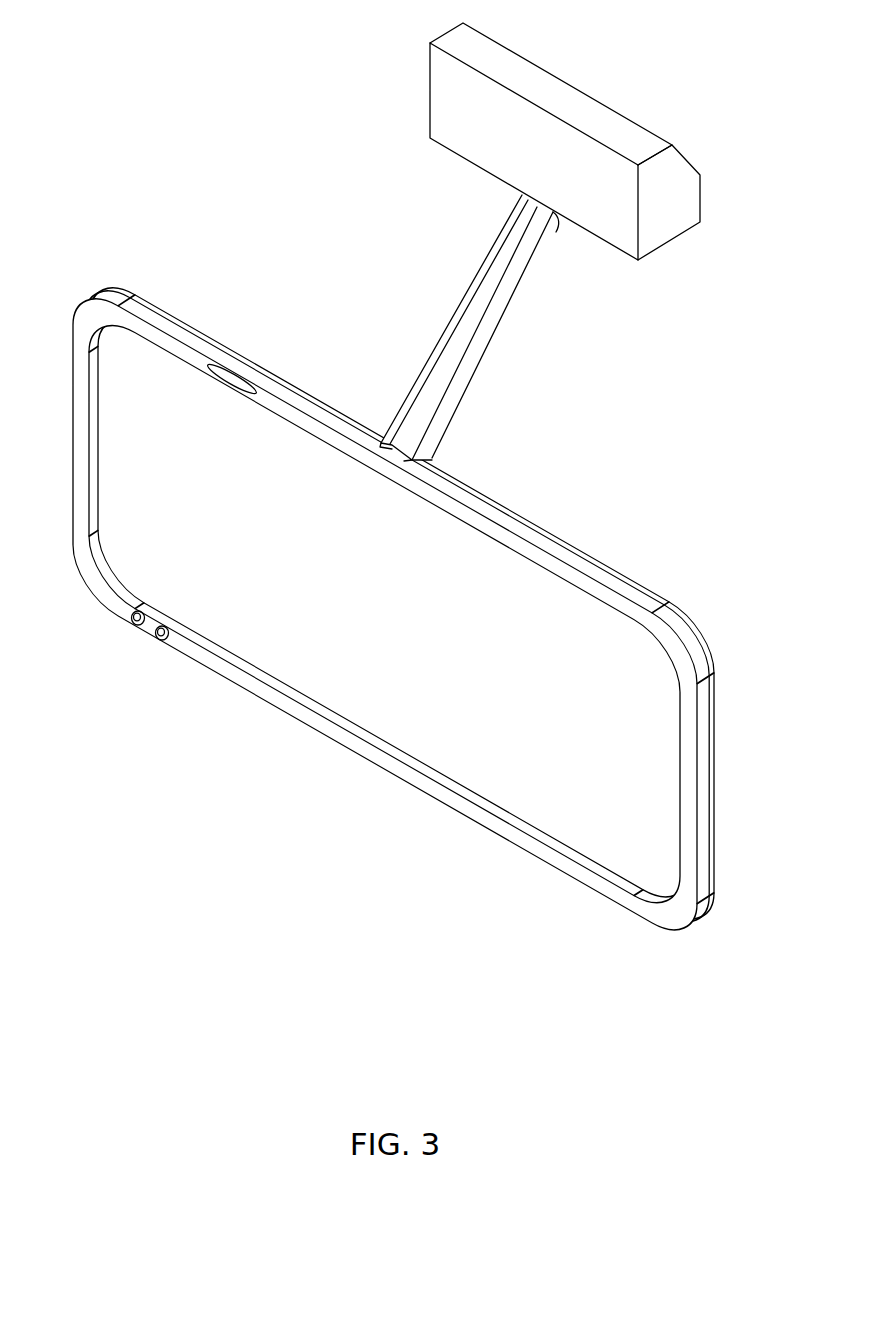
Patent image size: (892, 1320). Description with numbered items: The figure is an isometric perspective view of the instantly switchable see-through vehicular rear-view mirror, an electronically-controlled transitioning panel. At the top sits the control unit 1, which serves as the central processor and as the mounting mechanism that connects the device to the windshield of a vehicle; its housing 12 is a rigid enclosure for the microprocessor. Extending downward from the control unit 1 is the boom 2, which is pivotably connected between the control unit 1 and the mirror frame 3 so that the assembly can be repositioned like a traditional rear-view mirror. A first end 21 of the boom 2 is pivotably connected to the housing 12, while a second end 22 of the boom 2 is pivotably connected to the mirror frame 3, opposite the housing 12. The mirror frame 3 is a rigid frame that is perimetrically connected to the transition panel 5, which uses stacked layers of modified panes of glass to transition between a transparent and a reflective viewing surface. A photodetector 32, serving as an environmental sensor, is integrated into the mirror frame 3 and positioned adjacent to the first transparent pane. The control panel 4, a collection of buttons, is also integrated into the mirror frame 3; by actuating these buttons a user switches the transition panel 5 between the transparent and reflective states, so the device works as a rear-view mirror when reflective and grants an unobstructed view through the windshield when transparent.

The control unit 1 is at (562, 134).
The housing 12 is at (680, 207).
The boom 2 is at (449, 328).
The first end 21 is at (470, 327).
The second end 22 is at (388, 438).
The mirror frame 3 is at (432, 608).
The photodetector 32 is at (230, 380).
The control panel 4 is at (143, 648).
The transition panel 5 is at (437, 753).